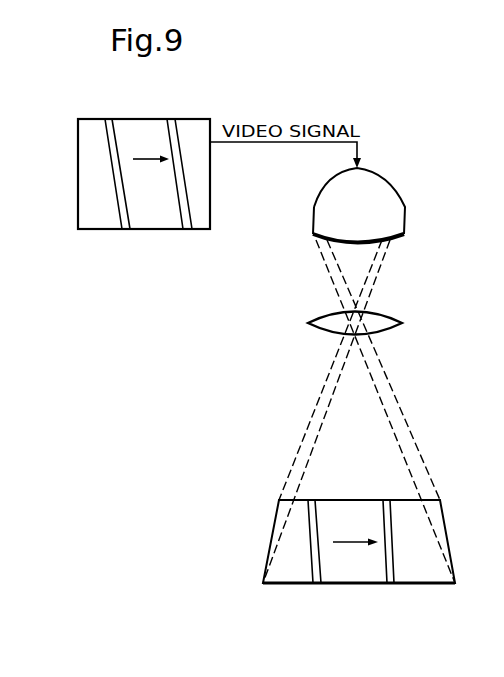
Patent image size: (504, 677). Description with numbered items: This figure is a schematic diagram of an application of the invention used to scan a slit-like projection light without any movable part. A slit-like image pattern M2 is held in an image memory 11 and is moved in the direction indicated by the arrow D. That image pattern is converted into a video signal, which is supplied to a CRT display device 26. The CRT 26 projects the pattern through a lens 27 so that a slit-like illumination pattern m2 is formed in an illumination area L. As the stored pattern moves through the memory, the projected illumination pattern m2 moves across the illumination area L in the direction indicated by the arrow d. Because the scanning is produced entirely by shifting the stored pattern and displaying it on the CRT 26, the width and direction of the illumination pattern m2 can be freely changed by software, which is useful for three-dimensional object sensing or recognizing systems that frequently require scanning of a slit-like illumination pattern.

The image memory 11 is at (197, 119).
The slit-like image pattern M2 is at (110, 153).
The arrow indicating direction of movement of image pattern D is at (151, 174).
The CRT display device 26 is at (405, 207).
The lens 27 is at (396, 313).
The illumination area L is at (430, 583).
The slit-like illumination pattern m2 is at (312, 563).
The arrow indicating direction of movement of illumination pattern d is at (355, 555).